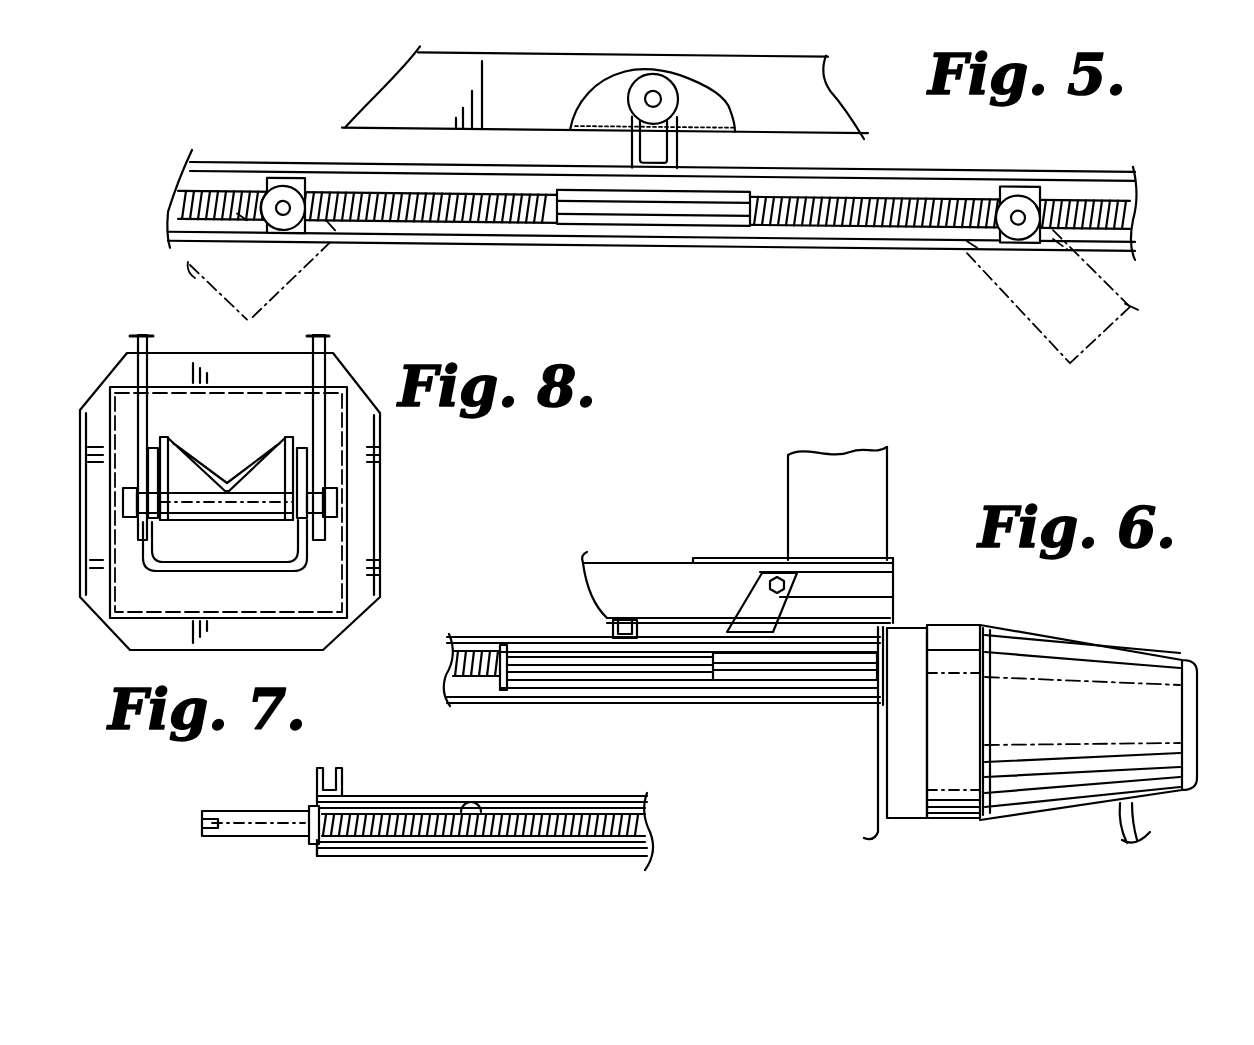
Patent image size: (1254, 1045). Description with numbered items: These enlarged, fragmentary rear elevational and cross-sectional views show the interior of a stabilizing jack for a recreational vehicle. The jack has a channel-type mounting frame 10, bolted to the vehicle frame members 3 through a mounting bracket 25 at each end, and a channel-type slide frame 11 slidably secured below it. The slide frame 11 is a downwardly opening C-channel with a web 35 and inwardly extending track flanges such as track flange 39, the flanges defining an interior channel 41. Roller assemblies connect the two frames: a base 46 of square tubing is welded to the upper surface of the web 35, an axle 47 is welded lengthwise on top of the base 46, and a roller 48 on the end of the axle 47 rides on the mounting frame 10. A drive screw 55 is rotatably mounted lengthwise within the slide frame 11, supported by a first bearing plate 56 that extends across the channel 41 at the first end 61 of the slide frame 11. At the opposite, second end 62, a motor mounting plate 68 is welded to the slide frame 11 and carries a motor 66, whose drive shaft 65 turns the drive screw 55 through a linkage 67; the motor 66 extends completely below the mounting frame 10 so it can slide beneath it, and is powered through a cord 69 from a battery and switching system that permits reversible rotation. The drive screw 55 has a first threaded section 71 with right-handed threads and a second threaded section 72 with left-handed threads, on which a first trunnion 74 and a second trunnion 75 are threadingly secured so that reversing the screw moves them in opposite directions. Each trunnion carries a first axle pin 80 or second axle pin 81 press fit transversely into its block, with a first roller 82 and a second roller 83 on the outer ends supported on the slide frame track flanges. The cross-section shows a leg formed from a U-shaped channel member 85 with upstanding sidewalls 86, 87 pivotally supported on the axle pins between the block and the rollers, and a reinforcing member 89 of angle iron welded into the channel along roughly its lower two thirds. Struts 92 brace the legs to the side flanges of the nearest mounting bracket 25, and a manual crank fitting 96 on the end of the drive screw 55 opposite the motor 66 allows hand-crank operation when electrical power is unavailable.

In FIG. 6, the frame members 3 is at (893, 472).
In FIG. 5, the mounting frame 10 is at (828, 84).
In FIG. 6, the mounting frame 10 is at (613, 563).
In FIG. 6, the slide frame 11 is at (530, 637).
In FIG. 7, the slide frame 11 is at (589, 797).
In FIG. 6, the mounting bracket 25 is at (757, 557).
In FIG. 7, the web 35 is at (553, 800).
In FIG. 5, the track flange 39 is at (503, 237).
In FIG. 7, the track flange 39 is at (520, 857).
In FIG. 7, the channel 41 is at (462, 803).
In FIG. 6, the base 46 is at (607, 630).
In FIG. 7, the base 46 is at (341, 793).
In FIG. 5, the axle 47 is at (648, 90).
In FIG. 5, the roller 48 is at (656, 80).
In FIG. 5, the drive screw 55 is at (594, 223).
In FIG. 6, the drive screw 55 is at (460, 647).
In FIG. 7, the drive screw 55 is at (420, 812).
In FIG. 7, the first bearing plate 56 is at (312, 803).
In FIG. 7, the first end 61 is at (313, 855).
In FIG. 6, the second end 62 is at (838, 707).
In FIG. 6, the drive shaft 65 is at (873, 697).
In FIG. 6, the motor 66 is at (1060, 637).
In FIG. 6, the linkage 67 is at (737, 673).
In FIG. 6, the motor mounting plate 68 is at (885, 825).
In FIG. 6, the cord 69 is at (1117, 828).
In FIG. 5, the first threaded section 71 is at (427, 218).
In FIG. 5, the second threaded section 72 is at (847, 216).
In FIG. 5, the first trunnion 74 is at (280, 174).
In FIG. 5, the second trunnion 75 is at (1012, 204).
In FIG. 5, the first axle pin 80 is at (292, 201).
In FIG. 5, the second axle pin 81 is at (1019, 202).
In FIG. 5, the first roller 82 is at (268, 192).
In FIG. 5, the second roller 83 is at (1038, 208).
In FIG. 8, the U-shaped channel member 85 is at (303, 540).
In FIG. 8, the sidewall 86 is at (150, 515).
In FIG. 8, the sidewall 87 is at (297, 468).
In FIG. 8, the reinforcing member 89 is at (262, 457).
In FIG. 6, the struts 92 is at (750, 610).
In FIG. 7, the manual crank fitting 96 is at (230, 807).